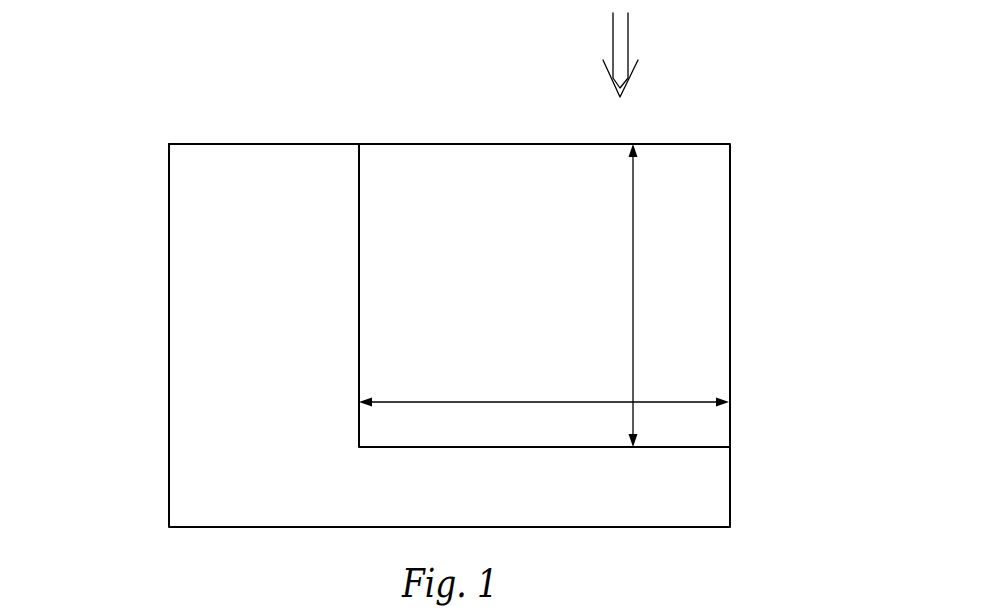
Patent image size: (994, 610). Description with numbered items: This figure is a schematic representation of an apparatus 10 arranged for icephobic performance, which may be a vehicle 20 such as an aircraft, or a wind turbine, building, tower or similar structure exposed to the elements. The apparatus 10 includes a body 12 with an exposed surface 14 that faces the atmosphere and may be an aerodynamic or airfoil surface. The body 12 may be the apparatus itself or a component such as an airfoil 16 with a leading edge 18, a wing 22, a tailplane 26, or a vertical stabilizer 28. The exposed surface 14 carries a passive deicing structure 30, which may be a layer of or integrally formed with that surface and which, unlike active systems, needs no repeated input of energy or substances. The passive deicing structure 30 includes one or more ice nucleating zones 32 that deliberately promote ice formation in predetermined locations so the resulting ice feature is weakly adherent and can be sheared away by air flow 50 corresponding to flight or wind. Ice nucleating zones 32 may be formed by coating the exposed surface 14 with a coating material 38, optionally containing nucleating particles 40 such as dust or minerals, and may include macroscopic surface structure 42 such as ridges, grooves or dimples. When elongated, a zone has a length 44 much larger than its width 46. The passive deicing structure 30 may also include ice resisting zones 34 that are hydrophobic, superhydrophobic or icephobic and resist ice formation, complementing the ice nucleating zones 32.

The apparatus 10 is at (141, 50).
The vehicle 20 is at (138, 94).
The body 12 is at (265, 144).
The exposed surface 14 is at (393, 144).
The airfoil 16 is at (422, 143).
The leading edge 18 is at (448, 143).
The wing 22 is at (495, 143).
The tailplane 26 is at (527, 142).
The vertical stabilizer 28 is at (557, 142).
The passive deicing structure 30 is at (697, 171).
The ice nucleating zone 32 is at (709, 200).
The ice resisting zone 34 is at (688, 232).
The coating material 38 is at (704, 260).
The nucleating particles 40 is at (682, 292).
The macroscopic surface structure 42 is at (698, 323).
The length 44 is at (468, 400).
The width 46 is at (633, 300).
The air flow 50 is at (629, 40).